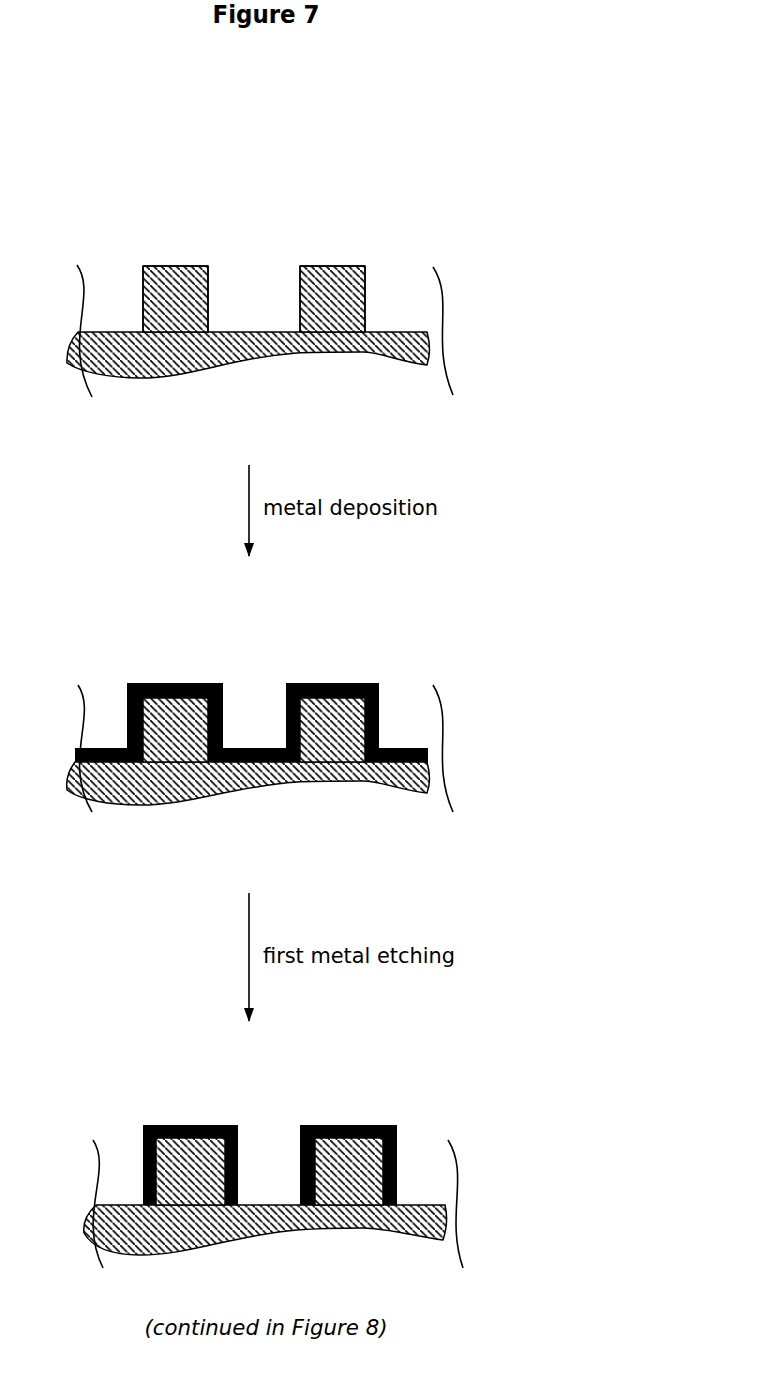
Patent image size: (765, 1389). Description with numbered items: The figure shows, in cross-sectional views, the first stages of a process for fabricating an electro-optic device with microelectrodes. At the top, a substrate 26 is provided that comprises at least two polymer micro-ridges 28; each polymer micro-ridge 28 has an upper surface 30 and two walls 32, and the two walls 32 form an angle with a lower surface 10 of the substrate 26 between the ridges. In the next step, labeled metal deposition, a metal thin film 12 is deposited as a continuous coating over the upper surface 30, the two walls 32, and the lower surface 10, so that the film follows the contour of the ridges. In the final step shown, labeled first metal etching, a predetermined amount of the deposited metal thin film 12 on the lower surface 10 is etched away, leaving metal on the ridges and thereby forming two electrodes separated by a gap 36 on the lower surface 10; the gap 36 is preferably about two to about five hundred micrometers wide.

The lower surface 10 is at (253, 330).
The metal thin film 12 is at (168, 683).
The substrate 26 is at (244, 235).
The polymer micro-ridge 28 is at (152, 240).
The upper surface 30 is at (177, 265).
The walls 32 is at (142, 298).
The gap 36 is at (262, 1152).